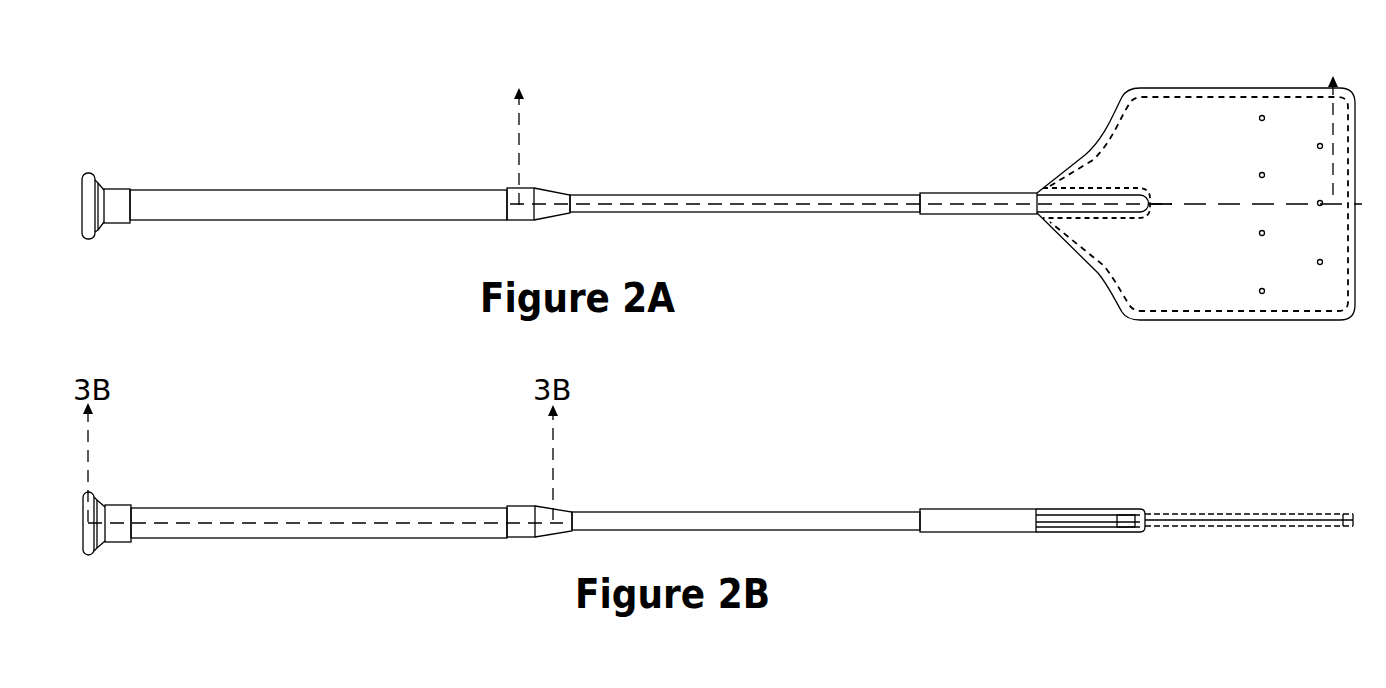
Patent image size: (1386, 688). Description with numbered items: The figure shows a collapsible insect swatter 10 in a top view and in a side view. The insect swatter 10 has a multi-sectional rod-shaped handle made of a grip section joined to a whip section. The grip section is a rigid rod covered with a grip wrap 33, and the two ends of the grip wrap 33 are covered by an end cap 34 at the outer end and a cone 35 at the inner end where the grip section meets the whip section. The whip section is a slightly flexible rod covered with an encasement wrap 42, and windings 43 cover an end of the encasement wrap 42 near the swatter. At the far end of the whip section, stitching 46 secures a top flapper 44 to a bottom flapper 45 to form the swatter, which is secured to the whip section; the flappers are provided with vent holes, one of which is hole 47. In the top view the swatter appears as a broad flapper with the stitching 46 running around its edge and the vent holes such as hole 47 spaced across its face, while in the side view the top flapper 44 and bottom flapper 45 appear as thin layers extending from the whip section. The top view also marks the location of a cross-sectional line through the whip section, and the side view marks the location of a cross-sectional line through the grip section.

In FIG. 2A, the insect swatter 10 is at (672, 123).
In FIG. 2A, the grip wrap 33 is at (301, 190).
In FIG. 2B, the grip wrap 33 is at (300, 507).
In FIG. 2A, the end cap 34 is at (119, 187).
In FIG. 2B, the end cap 34 is at (115, 504).
In FIG. 2A, the cone 35 is at (536, 187).
In FIG. 2B, the cone 35 is at (530, 502).
In FIG. 2A, the encasement wrap 42 is at (722, 192).
In FIG. 2B, the encasement wrap 42 is at (715, 511).
In FIG. 2A, the windings 43 is at (978, 191).
In FIG. 2B, the windings 43 is at (963, 507).
In FIG. 2A, the top flapper 44 is at (1188, 237).
In FIG. 2B, the top flapper 44 is at (1194, 531).
In FIG. 2B, the bottom flapper 45 is at (1189, 533).
In FIG. 2A, the stitching 46 is at (1205, 312).
In FIG. 2A, the hole 47 is at (1257, 172).